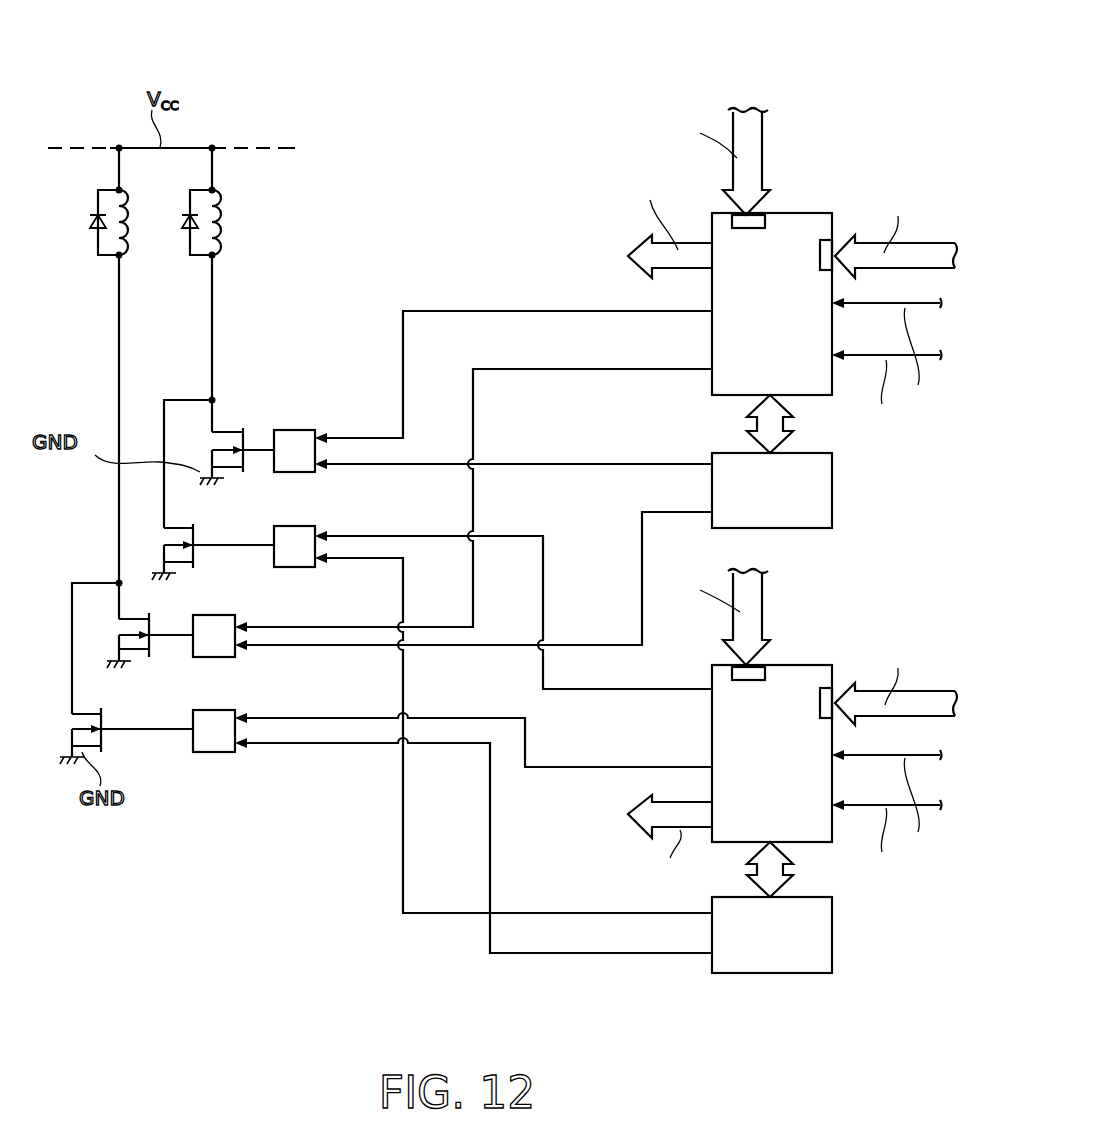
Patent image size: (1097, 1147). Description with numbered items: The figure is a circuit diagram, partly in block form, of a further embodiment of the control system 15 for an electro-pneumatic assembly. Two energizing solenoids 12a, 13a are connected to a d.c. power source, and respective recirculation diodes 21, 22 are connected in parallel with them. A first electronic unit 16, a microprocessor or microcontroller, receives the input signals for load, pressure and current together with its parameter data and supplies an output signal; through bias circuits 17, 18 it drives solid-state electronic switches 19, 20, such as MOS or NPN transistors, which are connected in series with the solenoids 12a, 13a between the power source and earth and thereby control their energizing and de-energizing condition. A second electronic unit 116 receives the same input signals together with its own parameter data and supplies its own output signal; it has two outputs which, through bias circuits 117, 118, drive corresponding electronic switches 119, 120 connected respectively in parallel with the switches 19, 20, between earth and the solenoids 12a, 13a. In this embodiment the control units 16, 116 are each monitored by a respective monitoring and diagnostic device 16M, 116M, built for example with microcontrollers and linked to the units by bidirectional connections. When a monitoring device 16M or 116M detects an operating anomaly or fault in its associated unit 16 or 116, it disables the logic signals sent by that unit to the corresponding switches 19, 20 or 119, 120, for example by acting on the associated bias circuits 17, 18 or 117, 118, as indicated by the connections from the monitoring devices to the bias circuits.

The control system 15 is at (852, 180).
The electronic unit 16 is at (795, 213).
The monitoring and diagnostic device 16M is at (832, 490).
The electronic unit 116 is at (795, 665).
The monitoring and diagnostic device 116M is at (832, 935).
The bias circuit 17 is at (293, 437).
The bias circuit 117 is at (287, 535).
The bias circuit 18 is at (212, 630).
The bias circuit 118 is at (216, 740).
The electronic switch 19 is at (228, 432).
The electronic switch 119 is at (177, 528).
The electronic switch 20 is at (110, 600).
The electronic switch 120 is at (85, 712).
The recirculation diode 21 is at (178, 222).
The recirculation diode 22 is at (90, 226).
The energizing solenoid 12a is at (222, 232).
The energizing solenoid 13a is at (123, 227).